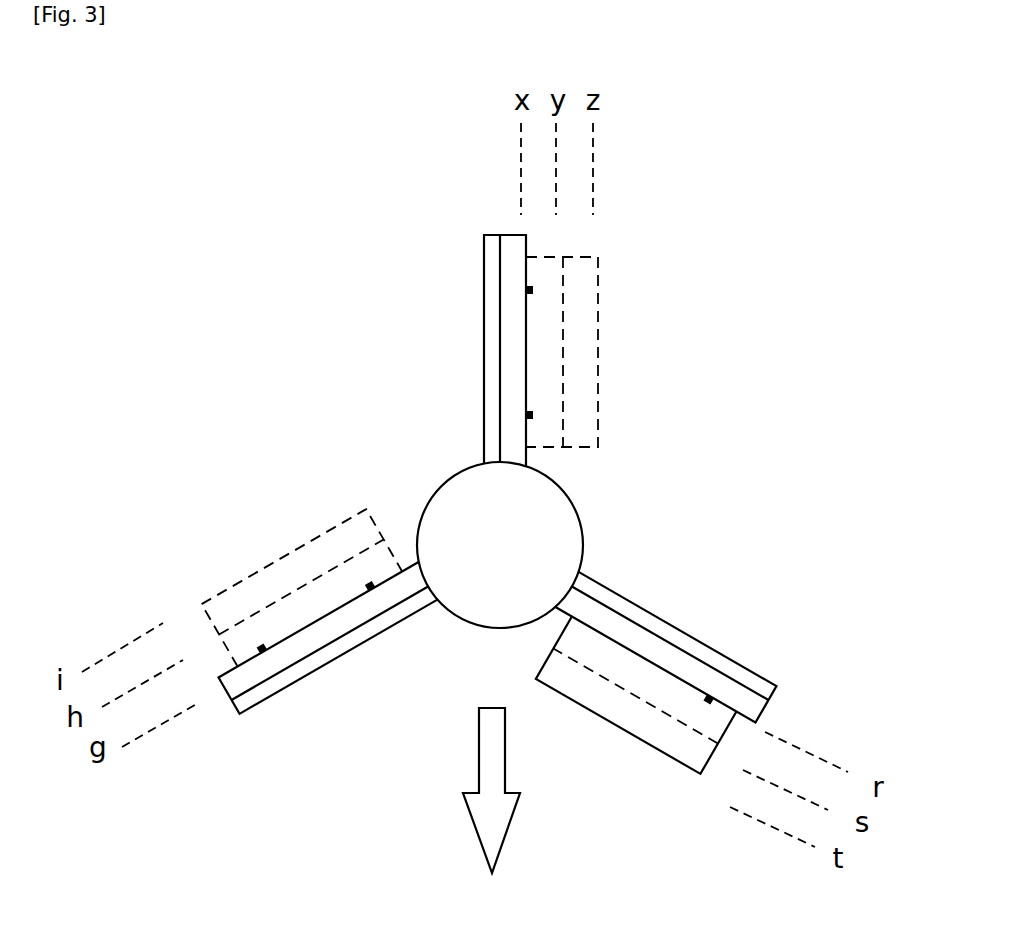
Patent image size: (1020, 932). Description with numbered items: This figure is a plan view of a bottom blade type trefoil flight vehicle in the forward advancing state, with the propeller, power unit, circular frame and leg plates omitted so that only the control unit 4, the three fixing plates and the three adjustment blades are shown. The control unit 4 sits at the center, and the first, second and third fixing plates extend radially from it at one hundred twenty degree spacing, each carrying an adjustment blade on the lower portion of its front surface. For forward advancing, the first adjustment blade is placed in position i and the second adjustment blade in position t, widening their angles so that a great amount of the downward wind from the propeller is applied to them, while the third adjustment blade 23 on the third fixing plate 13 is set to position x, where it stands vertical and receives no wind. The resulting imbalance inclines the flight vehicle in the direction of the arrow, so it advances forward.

The control unit 4 is at (536, 533).
The third fixing plate 13 is at (418, 350).
The third adjustment blade 23 is at (634, 352).